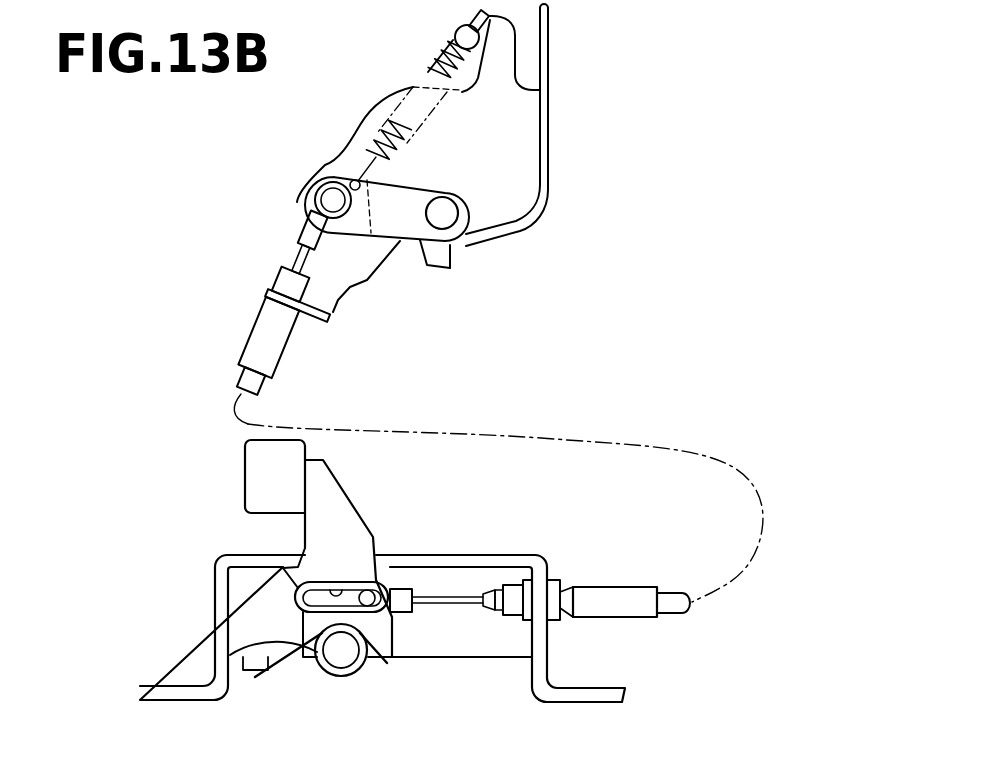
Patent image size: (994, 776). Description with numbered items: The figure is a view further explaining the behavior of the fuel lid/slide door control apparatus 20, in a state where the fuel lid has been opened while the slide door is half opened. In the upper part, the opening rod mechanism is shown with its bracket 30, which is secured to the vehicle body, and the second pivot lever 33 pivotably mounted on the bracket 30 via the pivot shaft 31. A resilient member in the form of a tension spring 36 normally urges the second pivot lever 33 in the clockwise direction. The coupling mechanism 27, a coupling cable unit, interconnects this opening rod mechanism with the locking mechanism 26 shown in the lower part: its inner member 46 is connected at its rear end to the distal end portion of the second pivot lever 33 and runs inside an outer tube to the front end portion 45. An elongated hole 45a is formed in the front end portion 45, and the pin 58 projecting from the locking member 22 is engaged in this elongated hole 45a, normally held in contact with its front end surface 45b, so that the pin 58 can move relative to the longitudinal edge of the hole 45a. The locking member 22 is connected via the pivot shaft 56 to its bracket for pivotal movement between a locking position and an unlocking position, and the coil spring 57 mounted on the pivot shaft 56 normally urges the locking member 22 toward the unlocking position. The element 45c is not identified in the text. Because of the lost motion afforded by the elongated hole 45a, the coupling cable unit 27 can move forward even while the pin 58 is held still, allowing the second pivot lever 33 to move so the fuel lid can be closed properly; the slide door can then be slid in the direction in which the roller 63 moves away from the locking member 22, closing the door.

The fuel lid/slide door control apparatus 20 is at (618, 176).
The locking member 22 is at (312, 528).
The locking mechanism 26 is at (167, 567).
The coupling mechanism 27 is at (262, 322).
The bracket 30 is at (548, 72).
The pivot shaft 31 is at (453, 226).
The second pivot lever 33 is at (413, 192).
The tension spring 36 is at (393, 133).
The front end portion 45 is at (427, 590).
The elongated hole 45a is at (343, 592).
The front end surface 45b is at (297, 603).
The cable housing 45c is at (385, 622).
The inner member 46 is at (297, 250).
The pivot shaft 56 is at (310, 633).
The coil spring 57 is at (333, 643).
The pin 58 is at (399, 590).
The roller 63 is at (248, 479).